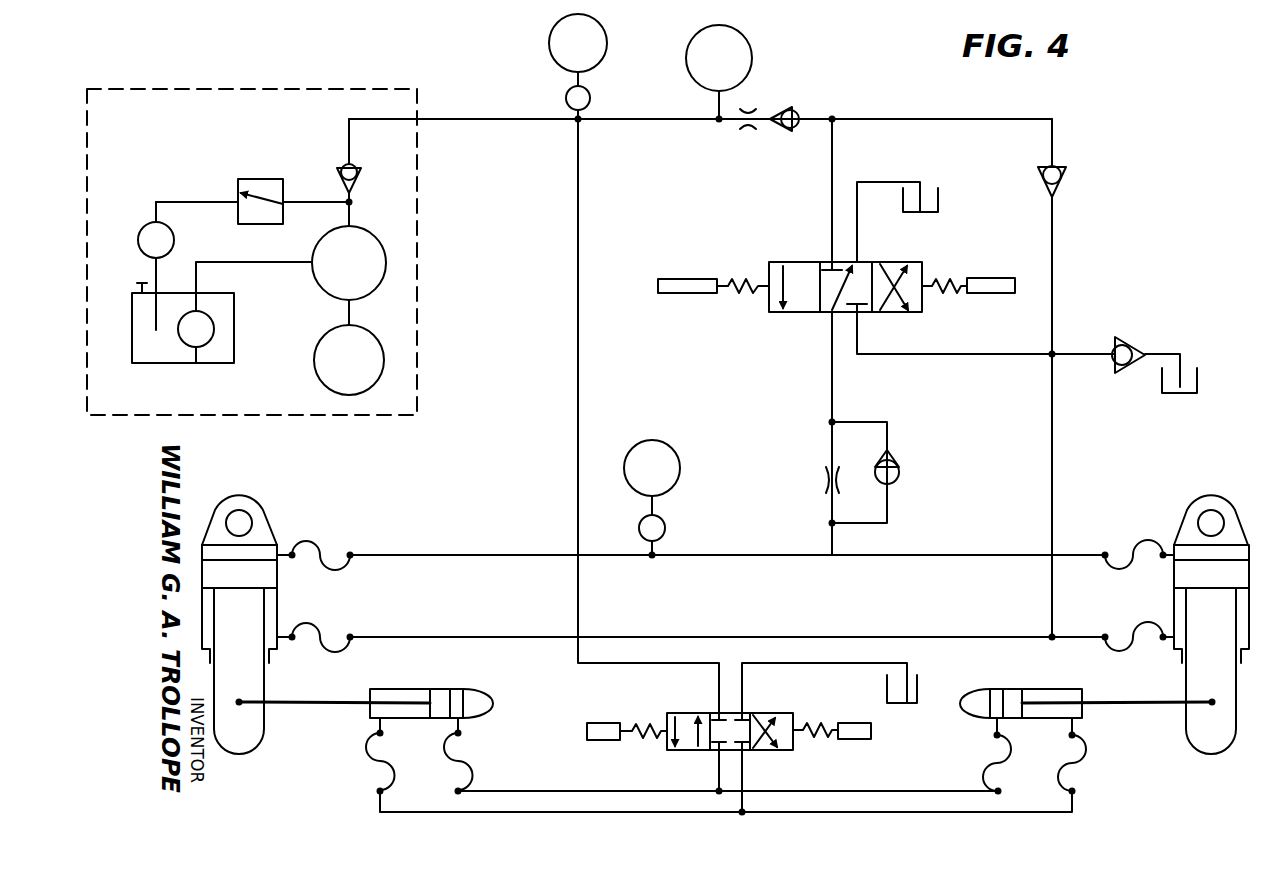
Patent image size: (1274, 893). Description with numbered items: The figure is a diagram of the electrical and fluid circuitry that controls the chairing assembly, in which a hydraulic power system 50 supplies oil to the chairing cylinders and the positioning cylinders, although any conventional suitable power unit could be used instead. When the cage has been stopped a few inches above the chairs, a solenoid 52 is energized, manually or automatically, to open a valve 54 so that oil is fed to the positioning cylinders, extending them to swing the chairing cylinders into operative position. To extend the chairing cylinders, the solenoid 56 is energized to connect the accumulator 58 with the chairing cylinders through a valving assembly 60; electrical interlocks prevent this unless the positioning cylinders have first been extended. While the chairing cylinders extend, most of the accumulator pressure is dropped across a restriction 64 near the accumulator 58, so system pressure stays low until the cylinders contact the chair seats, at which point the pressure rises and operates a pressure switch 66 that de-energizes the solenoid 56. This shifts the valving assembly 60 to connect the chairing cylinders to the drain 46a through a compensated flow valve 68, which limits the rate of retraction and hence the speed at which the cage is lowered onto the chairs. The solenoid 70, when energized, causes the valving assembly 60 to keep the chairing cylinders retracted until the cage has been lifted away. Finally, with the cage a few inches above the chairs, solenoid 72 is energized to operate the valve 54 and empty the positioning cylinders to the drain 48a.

The hydraulic power system 50 is at (409, 86).
The accumulator 58 is at (746, 53).
The restriction 64 is at (750, 132).
The drain 46a is at (938, 190).
The solenoid 56 is at (684, 282).
The valving assembly 60 is at (871, 260).
The solenoid 70 is at (996, 290).
The pressure switch 66 is at (677, 459).
The compensated flow valve 68 is at (822, 480).
The solenoid 52 is at (606, 728).
The valve 54 is at (756, 710).
The solenoid 72 is at (853, 728).
The drain 48a is at (928, 673).